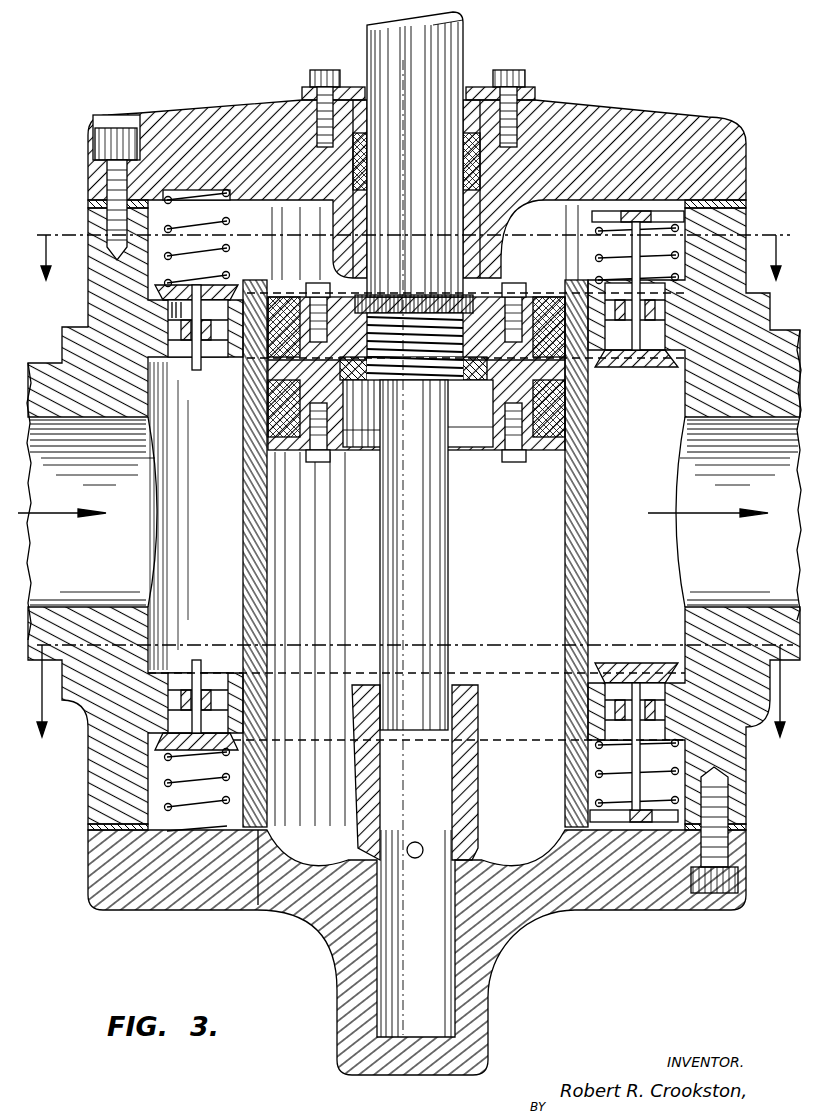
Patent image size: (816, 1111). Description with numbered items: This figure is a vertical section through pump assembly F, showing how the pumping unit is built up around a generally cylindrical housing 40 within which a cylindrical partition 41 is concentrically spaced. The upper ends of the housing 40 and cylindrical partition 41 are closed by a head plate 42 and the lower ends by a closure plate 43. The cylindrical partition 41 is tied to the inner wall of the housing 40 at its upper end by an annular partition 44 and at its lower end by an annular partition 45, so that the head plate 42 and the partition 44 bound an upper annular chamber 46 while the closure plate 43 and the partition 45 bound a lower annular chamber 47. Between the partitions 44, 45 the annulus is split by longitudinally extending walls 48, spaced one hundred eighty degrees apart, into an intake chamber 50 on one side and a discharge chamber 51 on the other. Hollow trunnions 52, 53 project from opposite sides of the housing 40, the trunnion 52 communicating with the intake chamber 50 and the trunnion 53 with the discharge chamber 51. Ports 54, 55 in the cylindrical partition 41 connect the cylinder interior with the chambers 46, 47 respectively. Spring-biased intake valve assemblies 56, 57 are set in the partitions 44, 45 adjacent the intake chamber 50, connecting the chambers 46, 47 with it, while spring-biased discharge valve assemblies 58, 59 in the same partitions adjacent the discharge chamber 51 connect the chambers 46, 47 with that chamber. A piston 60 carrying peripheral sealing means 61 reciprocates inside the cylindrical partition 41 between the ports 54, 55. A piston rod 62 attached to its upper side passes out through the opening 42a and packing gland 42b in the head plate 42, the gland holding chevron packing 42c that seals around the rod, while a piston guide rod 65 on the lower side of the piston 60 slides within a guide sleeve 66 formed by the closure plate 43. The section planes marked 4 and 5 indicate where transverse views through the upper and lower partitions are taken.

The housing 40 is at (745, 222).
The cylindrical partition 41 is at (565, 558).
The head plate 42 is at (176, 128).
The opening 42a is at (553, 140).
The packing gland 42b is at (502, 100).
The chevron packing 42c is at (350, 128).
The closure plate 43 is at (630, 893).
The annular partition 44 is at (234, 358).
The annular partition 45 is at (233, 648).
The annular chamber 46 is at (118, 228).
The annular chamber 47 is at (700, 787).
The longitudinally extending wall 48 is at (430, 605).
The intake chamber 50 is at (228, 509).
The discharge chamber 51 is at (641, 509).
The hollow trunnion 52 is at (44, 372).
The hollow trunnion 53 is at (795, 375).
The port 54 is at (258, 215).
The port 55 is at (250, 908).
The intake valve assembly 56 is at (163, 293).
The intake valve assembly 57 is at (173, 757).
The discharge valve assembly 58 is at (650, 366).
The discharge valve assembly 59 is at (640, 663).
The piston 60 is at (588, 394).
The sealing means 61 is at (268, 403).
The piston rod 62 is at (390, 55).
The piston guide rod 65 is at (388, 540).
The guide sleeve 66 is at (470, 797).
The section line 4- 4 is at (413, 267).
The section line 5- 5 is at (413, 707).